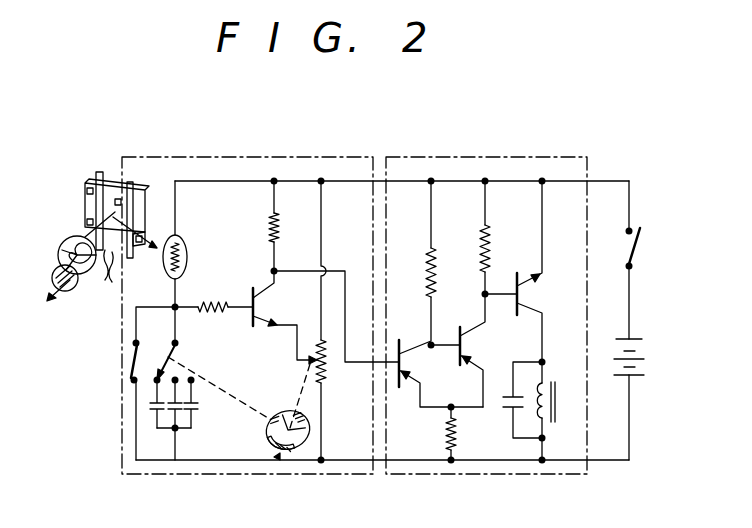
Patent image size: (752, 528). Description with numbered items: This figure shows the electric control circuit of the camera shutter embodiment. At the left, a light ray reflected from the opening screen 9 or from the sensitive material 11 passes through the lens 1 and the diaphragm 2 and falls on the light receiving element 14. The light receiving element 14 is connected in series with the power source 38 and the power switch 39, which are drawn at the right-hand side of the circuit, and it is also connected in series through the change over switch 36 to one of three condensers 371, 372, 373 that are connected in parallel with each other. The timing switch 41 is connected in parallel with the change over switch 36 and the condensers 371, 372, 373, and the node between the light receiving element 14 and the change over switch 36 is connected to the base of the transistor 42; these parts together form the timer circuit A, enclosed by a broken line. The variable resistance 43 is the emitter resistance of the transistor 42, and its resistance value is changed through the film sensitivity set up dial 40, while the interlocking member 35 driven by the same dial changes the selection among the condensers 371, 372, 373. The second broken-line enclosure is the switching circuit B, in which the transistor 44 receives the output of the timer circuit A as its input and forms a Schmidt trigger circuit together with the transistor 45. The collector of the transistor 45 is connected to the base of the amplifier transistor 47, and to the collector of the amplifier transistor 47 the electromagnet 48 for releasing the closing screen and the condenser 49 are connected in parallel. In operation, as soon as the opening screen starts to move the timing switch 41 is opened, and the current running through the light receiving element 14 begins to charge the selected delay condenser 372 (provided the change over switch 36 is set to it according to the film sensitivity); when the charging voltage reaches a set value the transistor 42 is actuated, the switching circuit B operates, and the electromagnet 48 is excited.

The lens 1 is at (52, 268).
The diaphragm 2 is at (73, 240).
The opening screen 9 is at (72, 296).
The sensitive material 11 is at (90, 203).
The light receiving element 14 is at (188, 240).
The interlocking member 35 is at (250, 403).
The change over switch 36 is at (178, 348).
The power source 38 is at (636, 334).
The power switch 39 is at (640, 247).
The film sensitivity set up dial 40 is at (295, 450).
The timing switch 41 is at (132, 362).
The transistor 42 is at (251, 290).
The variable resistance 43 is at (322, 375).
The transistor 44 is at (405, 330).
The transistor 45 is at (460, 330).
The amplifier transistor 47 is at (513, 275).
The electromagnet 48 is at (552, 423).
The condenser 49 is at (505, 413).
The condenser 371 is at (153, 416).
The condenser 372 is at (178, 400).
The condenser 373 is at (193, 418).
The timer circuit A is at (270, 160).
The switching circuit B is at (508, 160).